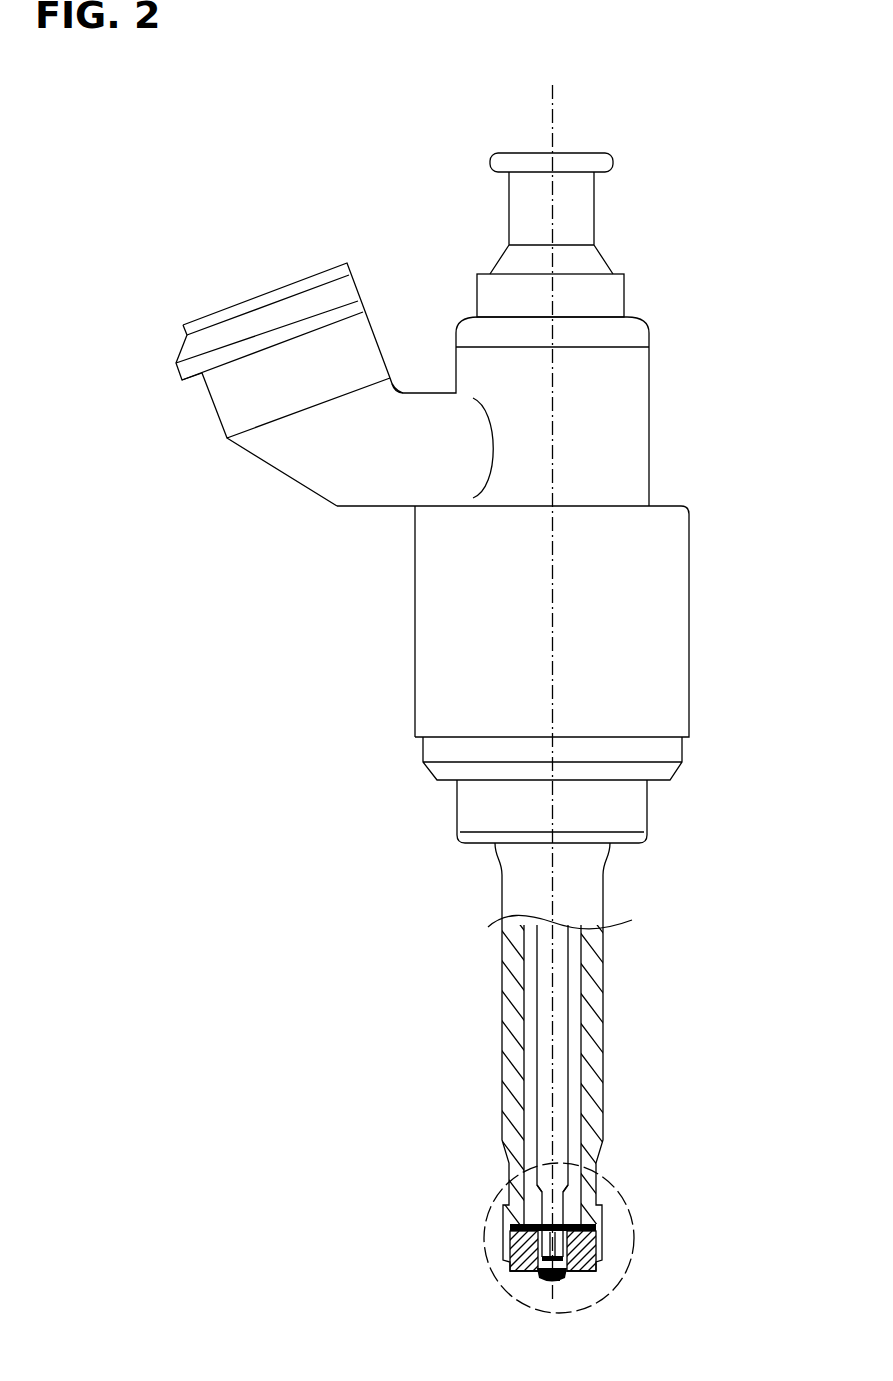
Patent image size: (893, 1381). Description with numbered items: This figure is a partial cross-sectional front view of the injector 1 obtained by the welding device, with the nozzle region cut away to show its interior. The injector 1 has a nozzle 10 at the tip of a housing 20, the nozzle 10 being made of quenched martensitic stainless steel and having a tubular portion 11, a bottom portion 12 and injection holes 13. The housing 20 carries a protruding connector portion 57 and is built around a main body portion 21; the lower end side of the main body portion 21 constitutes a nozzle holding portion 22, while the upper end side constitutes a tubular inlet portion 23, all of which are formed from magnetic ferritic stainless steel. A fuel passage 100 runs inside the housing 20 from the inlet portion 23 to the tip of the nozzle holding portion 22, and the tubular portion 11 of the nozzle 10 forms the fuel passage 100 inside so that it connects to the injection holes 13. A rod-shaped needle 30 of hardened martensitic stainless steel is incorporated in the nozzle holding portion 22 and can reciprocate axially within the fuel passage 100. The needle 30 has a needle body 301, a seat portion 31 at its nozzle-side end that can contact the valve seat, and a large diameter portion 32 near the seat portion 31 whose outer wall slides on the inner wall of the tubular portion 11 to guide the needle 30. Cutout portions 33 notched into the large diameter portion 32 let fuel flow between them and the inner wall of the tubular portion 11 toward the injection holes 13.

The injector 1 is at (643, 203).
The nozzle 10 is at (613, 1180).
The tubular portion 11 is at (510, 1253).
The bottom portion 12 is at (557, 1283).
The injection holes 13 is at (543, 1280).
The housing 20 is at (607, 952).
The main body portion 21 is at (690, 618).
The nozzle holding portion 22 is at (592, 1130).
The inlet portion 23 is at (627, 296).
The needle 30 is at (571, 1042).
The seat portion 31 is at (540, 1278).
The large diameter portion 32 is at (541, 1246).
The cutout portions 33 is at (532, 1222).
The connector portion 57 is at (212, 407).
The fuel passage 100 is at (573, 1002).
The needle body 301 is at (560, 1082).